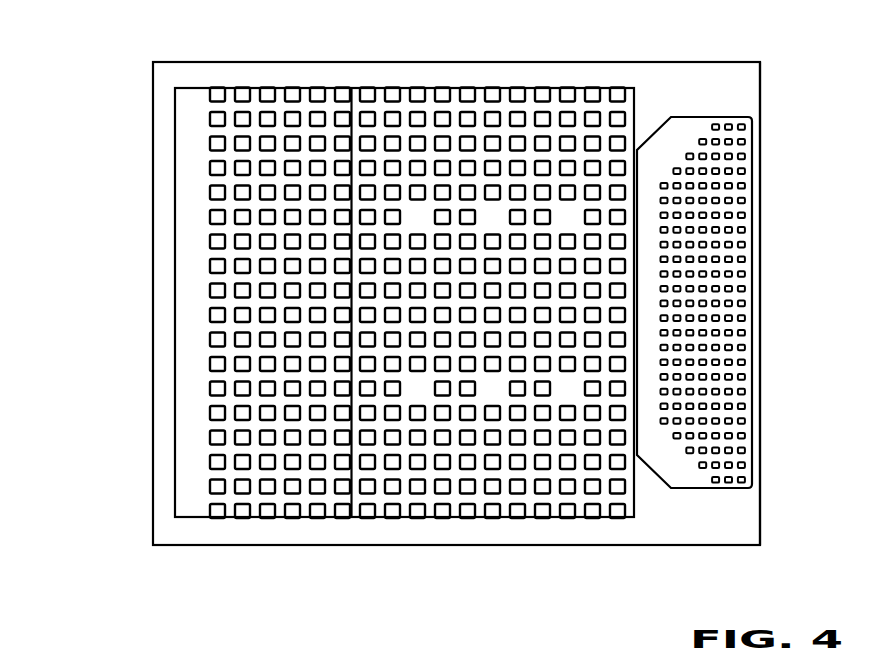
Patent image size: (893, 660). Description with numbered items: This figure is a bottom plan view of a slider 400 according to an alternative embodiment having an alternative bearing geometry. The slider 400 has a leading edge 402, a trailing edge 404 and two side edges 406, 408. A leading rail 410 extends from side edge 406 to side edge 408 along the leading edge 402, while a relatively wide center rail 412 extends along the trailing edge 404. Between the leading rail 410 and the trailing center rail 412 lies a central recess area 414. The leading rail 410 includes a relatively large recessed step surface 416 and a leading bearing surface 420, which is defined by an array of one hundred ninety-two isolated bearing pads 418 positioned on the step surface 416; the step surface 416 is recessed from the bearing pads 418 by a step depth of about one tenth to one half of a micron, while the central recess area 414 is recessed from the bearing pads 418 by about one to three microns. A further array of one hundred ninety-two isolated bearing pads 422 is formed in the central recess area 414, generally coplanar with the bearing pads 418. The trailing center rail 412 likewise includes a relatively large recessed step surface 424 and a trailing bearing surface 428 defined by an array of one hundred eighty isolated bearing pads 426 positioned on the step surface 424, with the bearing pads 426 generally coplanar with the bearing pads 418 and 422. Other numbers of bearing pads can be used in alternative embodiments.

The slider 400 is at (131, 107).
The leading edge 402 is at (155, 420).
The trailing edge 404 is at (760, 478).
The side edge 406 is at (613, 62).
The side edge 408 is at (623, 545).
The leading rail 410 is at (166, 230).
The center rail 412 is at (740, 254).
The central recess area 414 is at (480, 90).
The recessed step surface 416 is at (188, 293).
The isolated bearing pads 418 is at (290, 90).
The leading bearing surface 420 is at (320, 79).
The isolated bearing pads 422 is at (442, 90).
The recessed step surface 424 is at (667, 140).
The isolated bearing pads 426 is at (744, 274).
The trailing bearing surface 428 is at (720, 192).